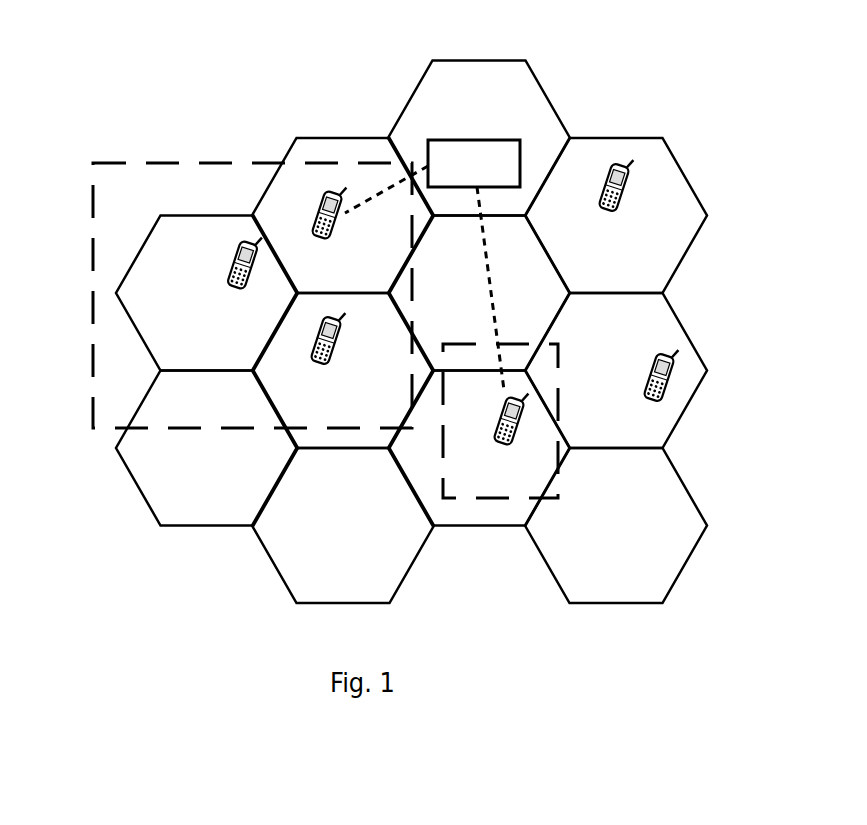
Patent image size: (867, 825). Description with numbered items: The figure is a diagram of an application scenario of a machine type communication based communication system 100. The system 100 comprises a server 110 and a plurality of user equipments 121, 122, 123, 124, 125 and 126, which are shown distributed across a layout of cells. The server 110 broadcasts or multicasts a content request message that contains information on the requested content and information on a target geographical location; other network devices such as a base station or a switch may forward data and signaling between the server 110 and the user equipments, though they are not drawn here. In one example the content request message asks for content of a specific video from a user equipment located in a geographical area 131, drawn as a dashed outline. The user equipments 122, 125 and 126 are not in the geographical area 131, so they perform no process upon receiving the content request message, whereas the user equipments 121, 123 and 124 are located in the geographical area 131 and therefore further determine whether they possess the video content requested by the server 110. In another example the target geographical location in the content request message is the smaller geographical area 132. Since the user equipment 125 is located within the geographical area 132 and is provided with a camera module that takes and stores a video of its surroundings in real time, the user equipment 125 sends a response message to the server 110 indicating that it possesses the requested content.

The machine type communication based communication system 100 is at (640, 63).
The server 110 is at (478, 140).
The user equipment 121 is at (333, 228).
The user equipment 122 is at (600, 218).
The user equipment 123 is at (323, 365).
The user equipment 124 is at (228, 282).
The user equipment 125 is at (500, 448).
The user equipment 126 is at (645, 383).
The geographical area 131 is at (92, 400).
The geographical area 132 is at (495, 500).